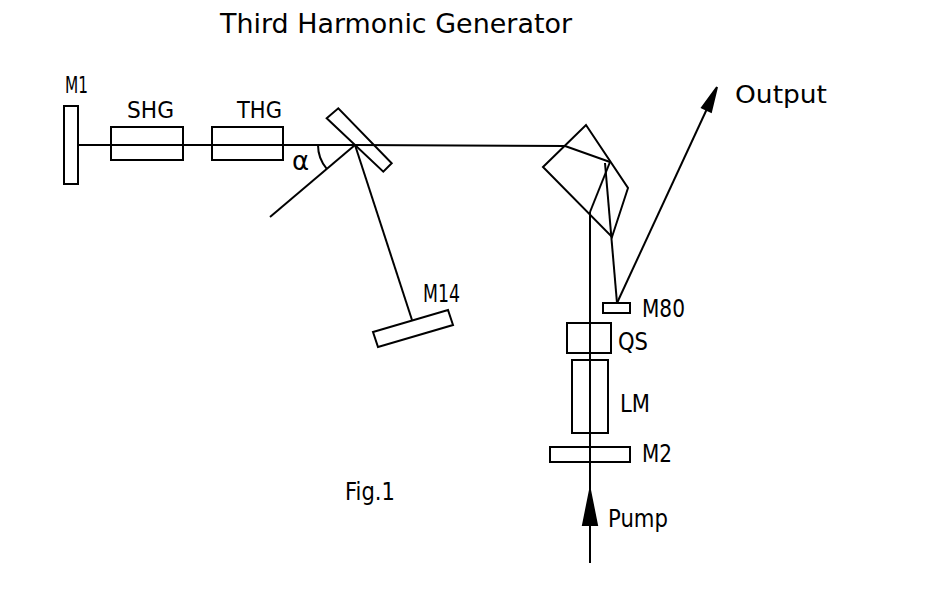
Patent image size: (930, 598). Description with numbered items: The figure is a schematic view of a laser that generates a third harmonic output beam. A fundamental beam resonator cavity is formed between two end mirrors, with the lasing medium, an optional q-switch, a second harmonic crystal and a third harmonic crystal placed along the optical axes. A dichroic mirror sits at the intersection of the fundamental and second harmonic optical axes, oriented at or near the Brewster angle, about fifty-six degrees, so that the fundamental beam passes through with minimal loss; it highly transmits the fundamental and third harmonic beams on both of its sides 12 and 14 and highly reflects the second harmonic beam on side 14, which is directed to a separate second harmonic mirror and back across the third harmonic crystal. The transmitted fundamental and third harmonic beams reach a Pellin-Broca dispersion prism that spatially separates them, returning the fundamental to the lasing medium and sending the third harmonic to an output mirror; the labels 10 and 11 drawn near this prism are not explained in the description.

The polarization rotator prism output beam path 10 is at (585, 197).
The beam path from mirror M60 to prism PR 11 is at (460, 131).
The side of dichroic mirror M60 12 is at (359, 125).
The side of dichroic mirror M60 14 is at (312, 181).